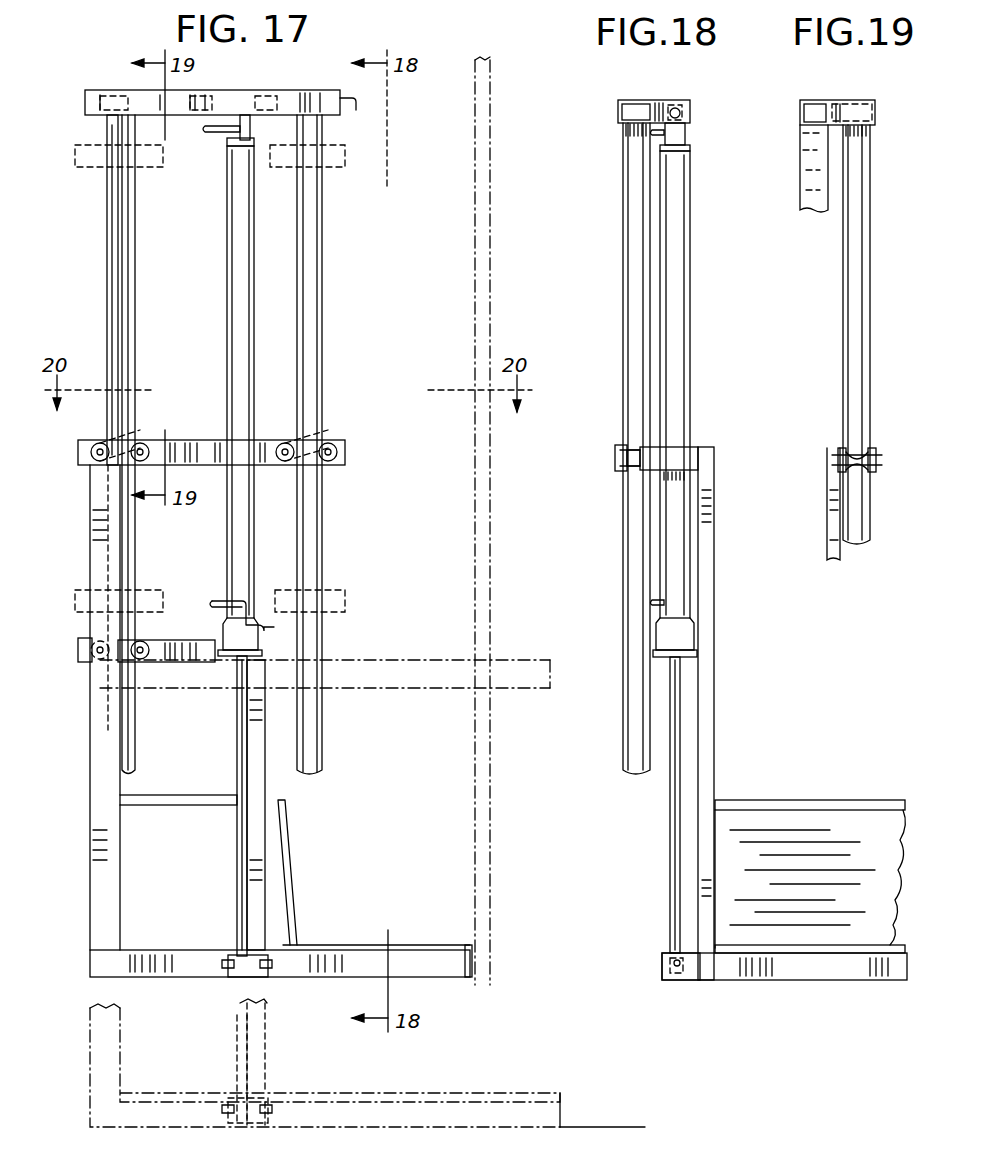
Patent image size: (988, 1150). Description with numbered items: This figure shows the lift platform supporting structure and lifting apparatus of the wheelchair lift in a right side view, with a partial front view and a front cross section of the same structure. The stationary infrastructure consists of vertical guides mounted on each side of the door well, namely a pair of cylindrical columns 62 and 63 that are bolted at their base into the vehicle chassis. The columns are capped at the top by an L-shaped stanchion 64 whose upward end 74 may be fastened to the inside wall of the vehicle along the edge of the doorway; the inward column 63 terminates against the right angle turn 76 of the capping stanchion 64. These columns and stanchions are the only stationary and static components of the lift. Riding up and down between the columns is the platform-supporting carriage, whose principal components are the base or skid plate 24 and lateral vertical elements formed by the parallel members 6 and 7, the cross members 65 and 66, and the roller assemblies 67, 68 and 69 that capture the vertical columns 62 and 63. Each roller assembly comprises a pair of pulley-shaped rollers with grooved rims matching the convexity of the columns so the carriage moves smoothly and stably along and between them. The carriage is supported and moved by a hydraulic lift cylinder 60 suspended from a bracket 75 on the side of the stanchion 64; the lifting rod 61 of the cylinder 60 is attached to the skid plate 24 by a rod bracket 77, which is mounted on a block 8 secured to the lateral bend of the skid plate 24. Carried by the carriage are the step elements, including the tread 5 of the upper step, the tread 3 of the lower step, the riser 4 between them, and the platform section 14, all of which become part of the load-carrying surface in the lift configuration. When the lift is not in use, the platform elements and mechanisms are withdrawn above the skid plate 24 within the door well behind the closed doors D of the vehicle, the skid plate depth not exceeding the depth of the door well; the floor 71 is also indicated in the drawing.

In FIG. 17, the tread of step B 3 is at (180, 800).
In FIG. 18, the tread of step B 3 is at (848, 800).
In FIG. 17, the riser 4 is at (289, 872).
In FIG. 18, the riser 4 is at (894, 858).
In FIG. 17, the tread of step A 5 is at (430, 943).
In FIG. 17, the parallel member 6 is at (265, 784).
In FIG. 18, the parallel member 6 is at (714, 733).
In FIG. 17, the parallel member 7 is at (90, 757).
In FIG. 19, the parallel member 7 is at (827, 540).
In FIG. 18, the block 8 is at (718, 981).
In FIG. 17, the platform section 14 is at (472, 960).
In FIG. 17, the skid plate 24 is at (370, 977).
In FIG. 17, the hydraulic lift cylinder 60 is at (227, 288).
In FIG. 18, the hydraulic lift cylinder 60 is at (690, 338).
In FIG. 17, the lifting rod 61 is at (237, 760).
In FIG. 18, the lifting rod 61 is at (670, 876).
In FIG. 17, the cylindrical column 62 is at (322, 282).
In FIG. 18, the cylindrical column 62 is at (622, 340).
In FIG. 17, the cylindrical column 63 is at (107, 289).
In FIG. 19, the cylindrical column 63 is at (870, 363).
In FIG. 17, the stanchion 64 is at (205, 92).
In FIG. 18, the stanchion 64 is at (636, 100).
In FIG. 19, the stanchion 64 is at (815, 100).
In FIG. 17, the cross member 65 is at (204, 440).
In FIG. 18, the cross member 65 is at (698, 447).
In FIG. 17, the cross member 66 is at (195, 622).
In FIG. 17, the roller assembly 67 is at (135, 446).
In FIG. 19, the roller assembly 67 is at (855, 450).
In FIG. 17, the roller assembly 68 is at (324, 446).
In FIG. 18, the roller assembly 68 is at (620, 446).
In FIG. 17, the roller assembly 69 is at (105, 660).
In FIG. 17, the floor 71 is at (576, 1125).
In FIG. 17, the upward end 74 is at (358, 115).
In FIG. 18, the upward end 74 is at (618, 113).
In FIG. 18, the bracket 75 is at (690, 112).
In FIG. 19, the right angle turn 76 is at (855, 100).
In FIG. 17, the rod bracket 77 is at (248, 978).
In FIG. 18, the rod bracket 77 is at (662, 971).
In FIG. 17, the doors D is at (490, 285).